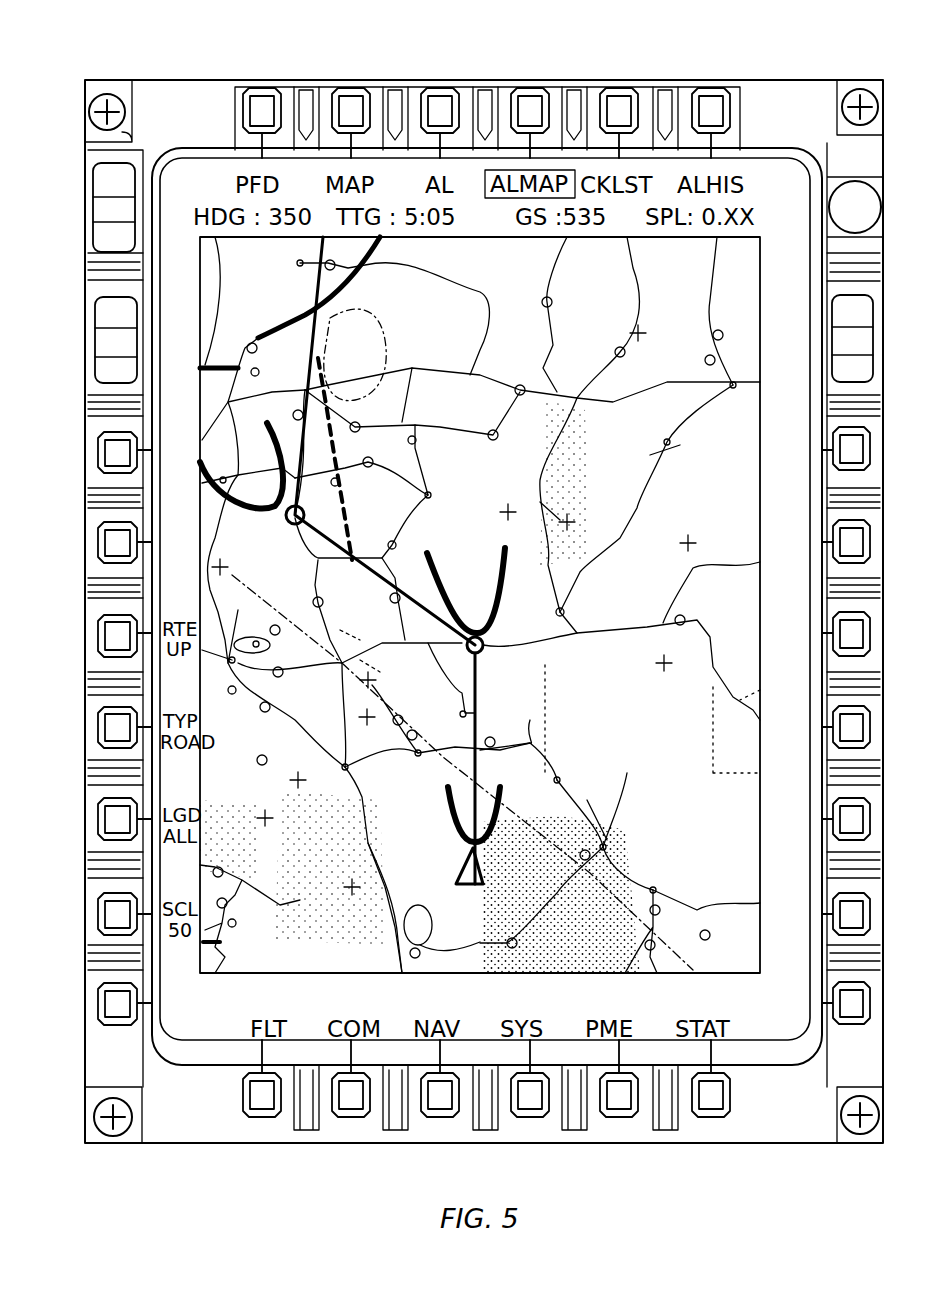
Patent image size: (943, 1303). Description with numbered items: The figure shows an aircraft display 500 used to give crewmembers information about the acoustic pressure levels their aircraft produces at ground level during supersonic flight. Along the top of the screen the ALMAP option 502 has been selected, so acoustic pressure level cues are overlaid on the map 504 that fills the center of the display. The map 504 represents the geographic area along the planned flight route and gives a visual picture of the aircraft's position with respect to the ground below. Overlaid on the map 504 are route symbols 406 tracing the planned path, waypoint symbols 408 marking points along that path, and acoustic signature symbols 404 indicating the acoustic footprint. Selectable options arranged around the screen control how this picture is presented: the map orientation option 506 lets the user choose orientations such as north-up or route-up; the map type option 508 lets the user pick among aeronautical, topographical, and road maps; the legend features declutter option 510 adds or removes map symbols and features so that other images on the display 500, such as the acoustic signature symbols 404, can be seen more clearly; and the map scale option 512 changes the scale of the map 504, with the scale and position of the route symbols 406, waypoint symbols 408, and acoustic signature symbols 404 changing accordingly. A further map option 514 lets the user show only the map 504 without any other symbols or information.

The display 500 is at (806, 56).
The ALMAP option 502 is at (530, 100).
The map 504 is at (762, 363).
The map orientation option 506 is at (108, 633).
The map type option 508 is at (108, 728).
The legend features declutter option 510 is at (108, 820).
The map scale option 512 is at (108, 914).
The map option 514 is at (345, 100).
The acoustic signature symbols 404 is at (497, 806).
The route symbols 406 is at (478, 714).
The waypoint symbols 408 is at (484, 645).